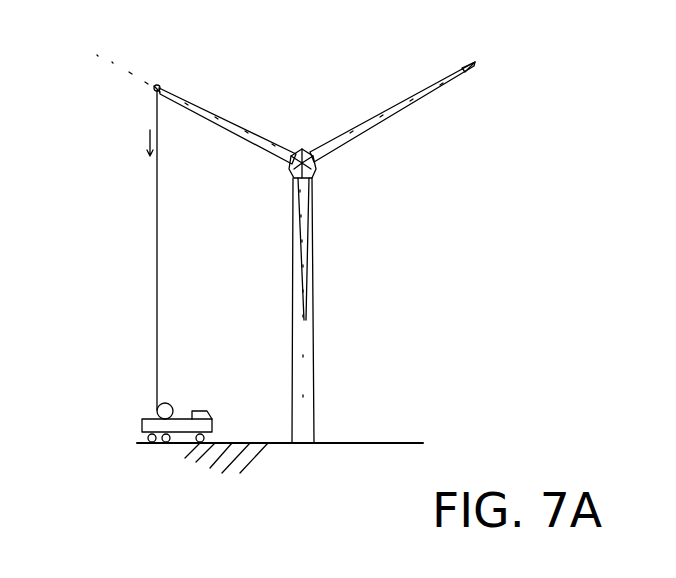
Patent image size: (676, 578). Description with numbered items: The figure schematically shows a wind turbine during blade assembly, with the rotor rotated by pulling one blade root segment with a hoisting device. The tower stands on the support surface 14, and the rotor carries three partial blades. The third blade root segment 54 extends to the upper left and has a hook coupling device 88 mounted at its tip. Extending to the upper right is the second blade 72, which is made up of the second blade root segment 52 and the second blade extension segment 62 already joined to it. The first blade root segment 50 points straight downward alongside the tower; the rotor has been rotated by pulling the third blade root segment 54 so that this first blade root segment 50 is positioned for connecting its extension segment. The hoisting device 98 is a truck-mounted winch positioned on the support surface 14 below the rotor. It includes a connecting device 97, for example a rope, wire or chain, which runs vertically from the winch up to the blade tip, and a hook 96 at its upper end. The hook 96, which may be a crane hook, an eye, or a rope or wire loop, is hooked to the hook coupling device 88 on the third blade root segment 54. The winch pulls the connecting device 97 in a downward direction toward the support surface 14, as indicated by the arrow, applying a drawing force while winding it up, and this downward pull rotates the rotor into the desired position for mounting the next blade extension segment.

The support surface 14 is at (382, 443).
The first blade root segment 50 is at (312, 300).
The second blade root segment 52 is at (357, 144).
The third blade root segment 54 is at (218, 111).
The second blade extension segment 62 is at (453, 82).
The second blade 72 is at (424, 134).
The hook coupling device 88 is at (161, 86).
The hook 96 is at (157, 91).
The connecting device 97 is at (157, 210).
The hoisting device 98 is at (110, 335).